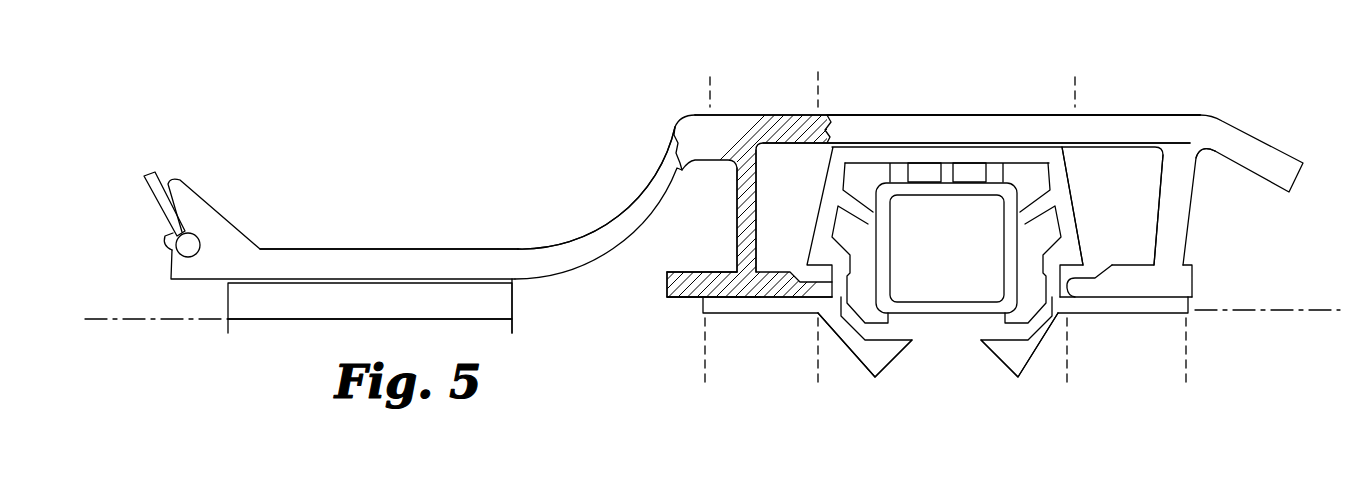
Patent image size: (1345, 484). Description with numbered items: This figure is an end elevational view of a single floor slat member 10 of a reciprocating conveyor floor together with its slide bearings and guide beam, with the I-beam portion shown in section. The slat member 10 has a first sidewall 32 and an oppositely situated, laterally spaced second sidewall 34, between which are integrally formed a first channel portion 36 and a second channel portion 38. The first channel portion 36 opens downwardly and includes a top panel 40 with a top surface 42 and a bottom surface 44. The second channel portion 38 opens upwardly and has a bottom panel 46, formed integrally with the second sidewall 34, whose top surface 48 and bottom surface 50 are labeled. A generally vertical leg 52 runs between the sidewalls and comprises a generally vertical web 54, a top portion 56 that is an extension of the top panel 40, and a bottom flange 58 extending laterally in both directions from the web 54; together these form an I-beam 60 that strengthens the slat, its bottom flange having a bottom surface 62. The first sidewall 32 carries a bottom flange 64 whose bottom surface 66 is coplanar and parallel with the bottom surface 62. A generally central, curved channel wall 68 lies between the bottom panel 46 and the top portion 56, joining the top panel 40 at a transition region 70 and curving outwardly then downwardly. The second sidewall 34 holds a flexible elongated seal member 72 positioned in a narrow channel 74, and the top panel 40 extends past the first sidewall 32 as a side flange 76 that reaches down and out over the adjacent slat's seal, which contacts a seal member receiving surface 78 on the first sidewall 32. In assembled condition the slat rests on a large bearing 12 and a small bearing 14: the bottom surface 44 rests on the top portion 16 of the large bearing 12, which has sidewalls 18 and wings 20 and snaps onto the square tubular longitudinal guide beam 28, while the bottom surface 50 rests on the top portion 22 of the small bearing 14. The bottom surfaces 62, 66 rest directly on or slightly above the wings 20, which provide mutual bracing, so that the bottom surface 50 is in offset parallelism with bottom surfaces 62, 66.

The floor slat member 10 is at (915, 86).
The large bearing 12 is at (1083, 203).
The small bearing 14 is at (493, 303).
The top portion 16 is at (965, 127).
The sidewalls 18 is at (1068, 238).
The wings 20 is at (792, 303).
The top portion 22 is at (418, 288).
The longitudinal guide beam 28 is at (955, 312).
The first sidewall 32 is at (1175, 222).
The second sidewall 34 is at (232, 238).
The first channel portion 36 is at (1018, 105).
The second channel portion 38 is at (462, 237).
The top panel 40 is at (1062, 130).
The top surface 42 is at (860, 128).
The bottom surface 44 is at (1102, 150).
The bottom panel 46 is at (370, 262).
The top surface 48 is at (495, 250).
The bottom surface 50 is at (380, 287).
The vertical leg 52 is at (700, 222).
The web 54 is at (752, 222).
The top portion 56 is at (748, 115).
The bottom flange 58 is at (746, 288).
The I-beam 60 is at (667, 303).
The bottom surface 62 is at (710, 297).
The bottom flange 64 is at (1167, 280).
The bottom surface 66 is at (1148, 300).
The curved channel wall 68 is at (617, 228).
The transition region 70 is at (670, 140).
The elongated seal member 72 is at (152, 172).
The narrow channel 74 is at (170, 243).
The side flange 76 is at (1265, 155).
The seal member receiving surface 78 is at (1192, 178).